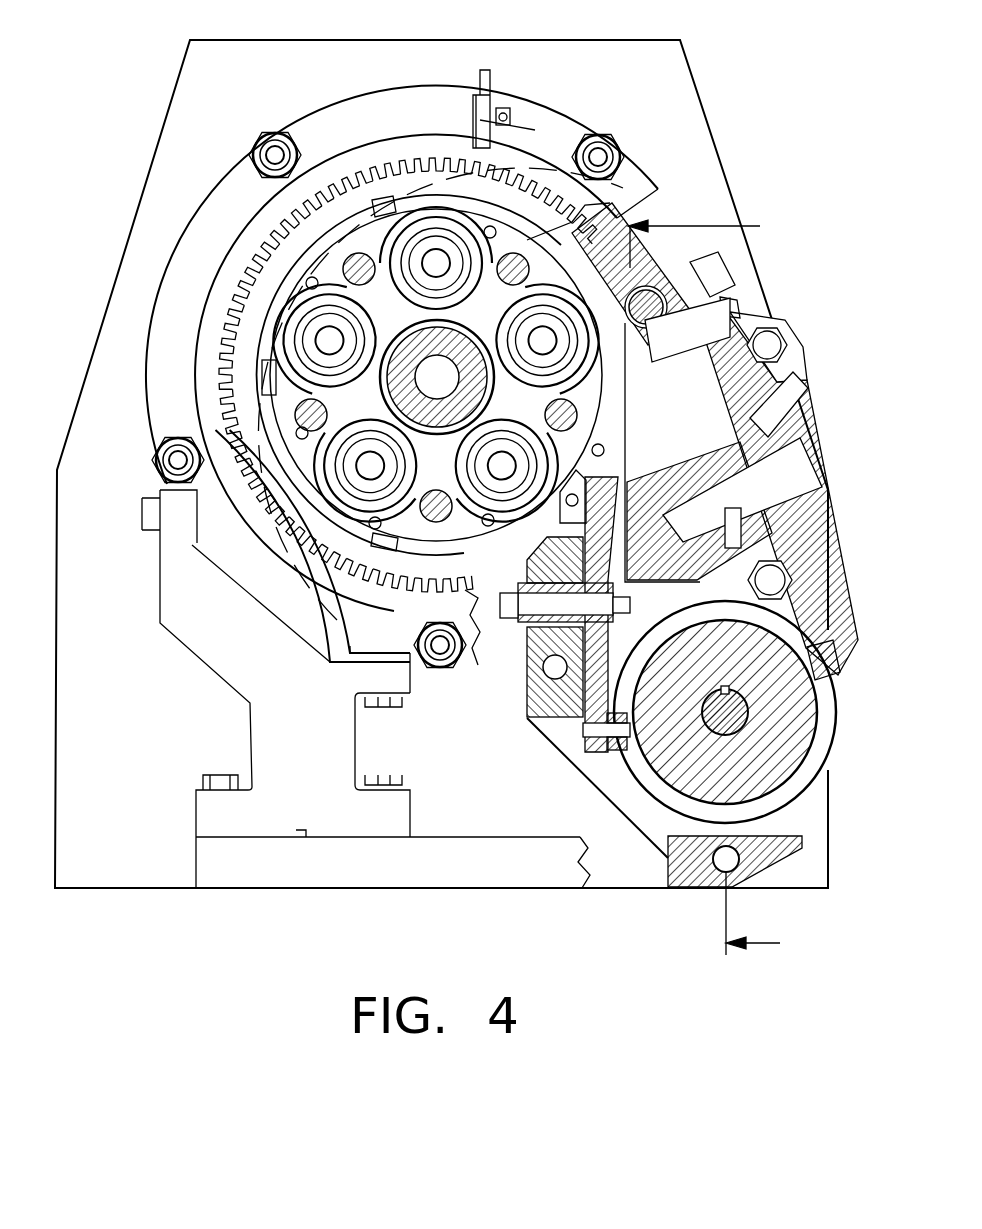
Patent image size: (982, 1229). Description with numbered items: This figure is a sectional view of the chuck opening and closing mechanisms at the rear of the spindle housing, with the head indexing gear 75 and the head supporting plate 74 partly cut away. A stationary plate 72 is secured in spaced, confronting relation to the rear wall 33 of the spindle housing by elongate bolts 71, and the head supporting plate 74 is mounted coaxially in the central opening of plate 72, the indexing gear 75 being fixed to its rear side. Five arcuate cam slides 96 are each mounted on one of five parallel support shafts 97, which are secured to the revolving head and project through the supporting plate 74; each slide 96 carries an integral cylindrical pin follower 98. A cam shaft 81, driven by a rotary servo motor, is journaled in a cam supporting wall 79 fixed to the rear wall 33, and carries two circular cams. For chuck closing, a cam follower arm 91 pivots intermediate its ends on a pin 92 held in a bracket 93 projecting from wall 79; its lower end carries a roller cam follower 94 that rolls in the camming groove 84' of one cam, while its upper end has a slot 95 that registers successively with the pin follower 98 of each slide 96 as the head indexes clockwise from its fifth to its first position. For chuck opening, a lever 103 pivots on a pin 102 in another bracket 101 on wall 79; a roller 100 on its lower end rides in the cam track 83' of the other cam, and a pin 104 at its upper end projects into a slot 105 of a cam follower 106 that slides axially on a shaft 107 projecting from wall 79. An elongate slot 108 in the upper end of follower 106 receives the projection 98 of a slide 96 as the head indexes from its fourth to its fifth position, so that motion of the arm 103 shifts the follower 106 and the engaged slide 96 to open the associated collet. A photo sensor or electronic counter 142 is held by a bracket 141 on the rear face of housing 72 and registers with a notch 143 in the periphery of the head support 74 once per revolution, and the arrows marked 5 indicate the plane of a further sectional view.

The rear wall 33 is at (188, 100).
The stationary plate 72 is at (127, 222).
The head supporting plate 74 is at (372, 140).
The head indexing gear 75 is at (228, 318).
The cam slide 96 is at (360, 233).
The support shaft 97 is at (450, 512).
The pin follower 98 is at (256, 375).
The slot 95 is at (562, 512).
The elongate bolt 71 is at (262, 150).
The photo sensor or electronic counter 142 is at (490, 95).
The bracket 141 is at (515, 115).
The notch 143 is at (530, 140).
The section line 5 is at (721, 588).
The elongate slot 108 is at (640, 255).
The cam follower 106 is at (660, 270).
The shaft 107 is at (712, 266).
The pin 104 is at (732, 315).
The slot 105 is at (732, 380).
The cam follower arm 103 is at (843, 600).
The pin 102 is at (800, 470).
The bracket 101 is at (633, 468).
The cam track 83' is at (752, 712).
The cam shaft 81 is at (722, 720).
The roller 100 is at (805, 665).
The camming slot 84' is at (597, 788).
The cam supporting wall 79 is at (655, 838).
The bracket 93 is at (527, 692).
The pin 92 is at (528, 630).
The cam follower arm 91 is at (585, 735).
The roller cam follower 94 is at (612, 755).